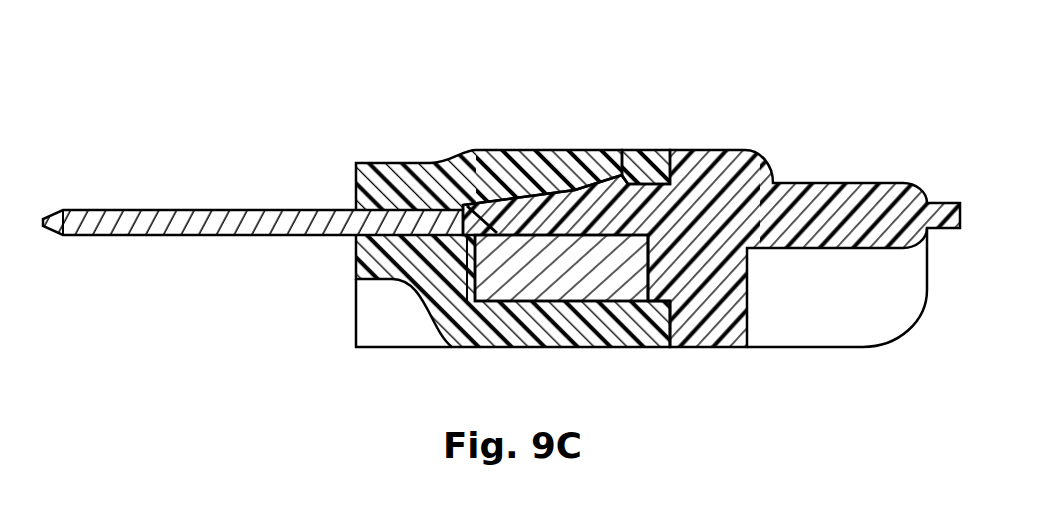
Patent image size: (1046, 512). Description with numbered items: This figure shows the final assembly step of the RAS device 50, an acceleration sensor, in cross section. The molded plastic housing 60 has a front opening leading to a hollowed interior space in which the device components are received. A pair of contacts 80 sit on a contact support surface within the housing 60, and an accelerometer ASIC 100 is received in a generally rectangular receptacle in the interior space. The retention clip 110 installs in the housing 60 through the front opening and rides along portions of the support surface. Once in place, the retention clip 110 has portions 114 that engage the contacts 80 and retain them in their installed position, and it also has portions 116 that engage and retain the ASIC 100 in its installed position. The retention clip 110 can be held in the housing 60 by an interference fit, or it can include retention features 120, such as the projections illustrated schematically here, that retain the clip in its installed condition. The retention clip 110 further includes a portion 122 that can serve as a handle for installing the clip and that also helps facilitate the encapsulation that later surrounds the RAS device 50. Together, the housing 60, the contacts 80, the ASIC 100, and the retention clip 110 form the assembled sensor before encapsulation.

The RAS device 50 is at (365, 106).
The housing 60 is at (378, 163).
The contacts 80 is at (223, 215).
The accelerometer ASIC 100 is at (572, 270).
The retention clip 110 is at (565, 201).
The portions 114 is at (480, 214).
The portions 116 is at (545, 218).
The retention features 120 is at (616, 176).
The portion 122 is at (812, 205).